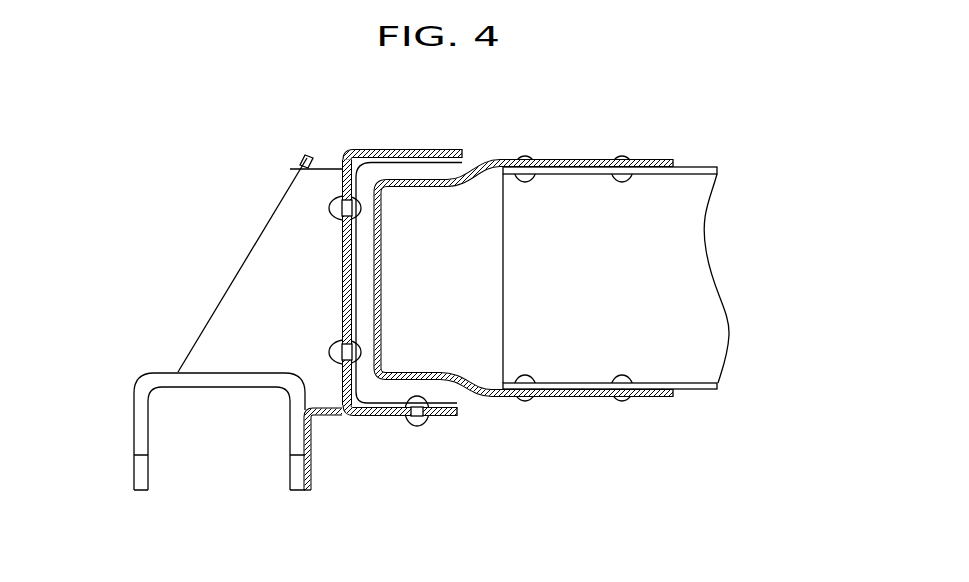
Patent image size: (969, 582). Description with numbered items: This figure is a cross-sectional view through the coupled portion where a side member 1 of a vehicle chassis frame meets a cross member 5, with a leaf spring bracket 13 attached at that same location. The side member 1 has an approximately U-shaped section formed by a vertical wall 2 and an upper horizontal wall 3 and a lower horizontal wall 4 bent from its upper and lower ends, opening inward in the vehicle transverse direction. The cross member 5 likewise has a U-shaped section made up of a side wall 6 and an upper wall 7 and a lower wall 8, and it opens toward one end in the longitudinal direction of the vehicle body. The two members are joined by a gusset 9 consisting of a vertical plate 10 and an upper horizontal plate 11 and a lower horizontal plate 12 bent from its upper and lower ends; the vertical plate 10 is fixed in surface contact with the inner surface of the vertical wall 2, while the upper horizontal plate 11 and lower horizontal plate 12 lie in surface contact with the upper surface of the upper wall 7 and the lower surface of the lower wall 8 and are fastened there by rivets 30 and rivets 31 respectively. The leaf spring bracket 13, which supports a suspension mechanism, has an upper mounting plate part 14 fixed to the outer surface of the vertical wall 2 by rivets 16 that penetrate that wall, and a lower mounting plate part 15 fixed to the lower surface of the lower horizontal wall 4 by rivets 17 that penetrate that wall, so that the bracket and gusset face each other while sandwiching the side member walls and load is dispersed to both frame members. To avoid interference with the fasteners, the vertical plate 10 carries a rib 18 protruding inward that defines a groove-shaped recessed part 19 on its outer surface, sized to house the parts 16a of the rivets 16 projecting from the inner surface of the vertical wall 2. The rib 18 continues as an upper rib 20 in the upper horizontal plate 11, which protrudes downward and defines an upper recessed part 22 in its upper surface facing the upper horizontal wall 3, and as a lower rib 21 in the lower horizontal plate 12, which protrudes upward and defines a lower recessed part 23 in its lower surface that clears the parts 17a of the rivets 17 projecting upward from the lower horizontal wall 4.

The side member 1 is at (333, 292).
The vertical wall 2 is at (342, 262).
The upper horizontal wall 3 is at (398, 150).
The lower horizontal wall 4 is at (531, 399).
The cross member 5 is at (645, 280).
The side wall 6 is at (697, 217).
The upper wall 7 is at (695, 166).
The lower wall 8 is at (712, 391).
The gusset 9 is at (553, 146).
The vertical plate 10 is at (342, 292).
The upper horizontal plate 11 is at (660, 160).
The lower horizontal plate 12 is at (665, 398).
The leaf spring bracket 13 is at (238, 315).
The upper mounting plate part 14 is at (338, 150).
The lower mounting plate part 15 is at (322, 418).
The rivets 16 is at (333, 206).
The parts of the rivets 16a is at (360, 150).
The rivets 17 is at (420, 425).
The parts of the rivets 17a is at (412, 398).
The rib 18 is at (384, 236).
The recessed part 19 is at (342, 232).
The upper rib 20 is at (425, 185).
The lower rib 21 is at (428, 385).
The upper recessed part 22 is at (425, 150).
The lower recessed part 23 is at (436, 420).
The rivets 30 is at (622, 157).
The rivets 31 is at (620, 402).